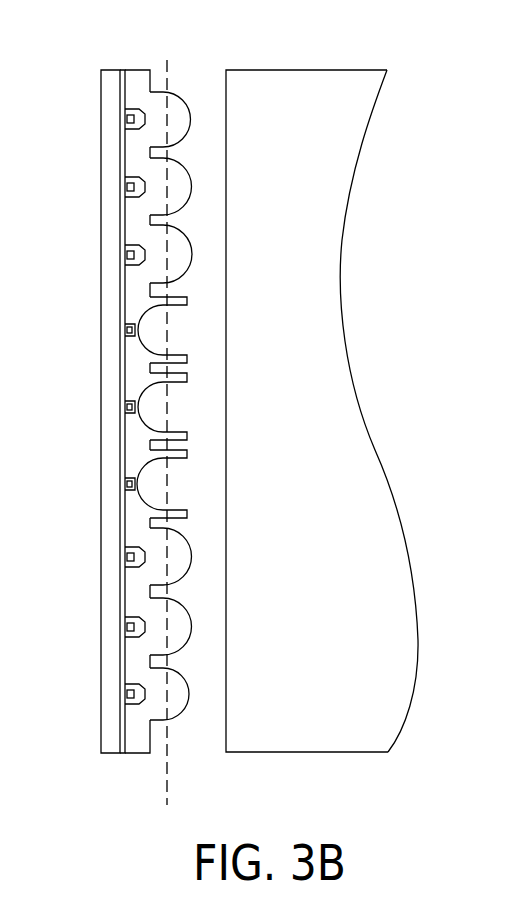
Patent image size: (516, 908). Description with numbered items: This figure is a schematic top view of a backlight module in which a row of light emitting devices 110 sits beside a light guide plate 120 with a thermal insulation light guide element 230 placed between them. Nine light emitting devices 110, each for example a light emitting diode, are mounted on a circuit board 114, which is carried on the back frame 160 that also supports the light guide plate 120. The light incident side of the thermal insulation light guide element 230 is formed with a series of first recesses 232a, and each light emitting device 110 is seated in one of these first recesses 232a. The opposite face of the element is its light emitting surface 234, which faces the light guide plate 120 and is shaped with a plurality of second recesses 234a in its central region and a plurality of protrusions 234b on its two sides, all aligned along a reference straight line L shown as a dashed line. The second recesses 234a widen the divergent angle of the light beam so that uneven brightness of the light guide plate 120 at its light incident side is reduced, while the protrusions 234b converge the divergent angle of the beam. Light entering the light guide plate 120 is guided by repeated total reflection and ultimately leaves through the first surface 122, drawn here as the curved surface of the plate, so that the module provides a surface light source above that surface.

The light emitting device 110 is at (128, 695).
The circuit board 114 is at (122, 80).
The light guide plate 120 is at (317, 737).
The first surface 122 is at (318, 402).
The back frame 160 is at (108, 102).
The thermal insulation light guide element 230 is at (140, 80).
The first recesses 232a is at (141, 256).
The light emitting surface 234 is at (182, 236).
The second recesses 234a is at (160, 410).
The protrusions 234b is at (180, 693).
The reference straight line L is at (168, 448).